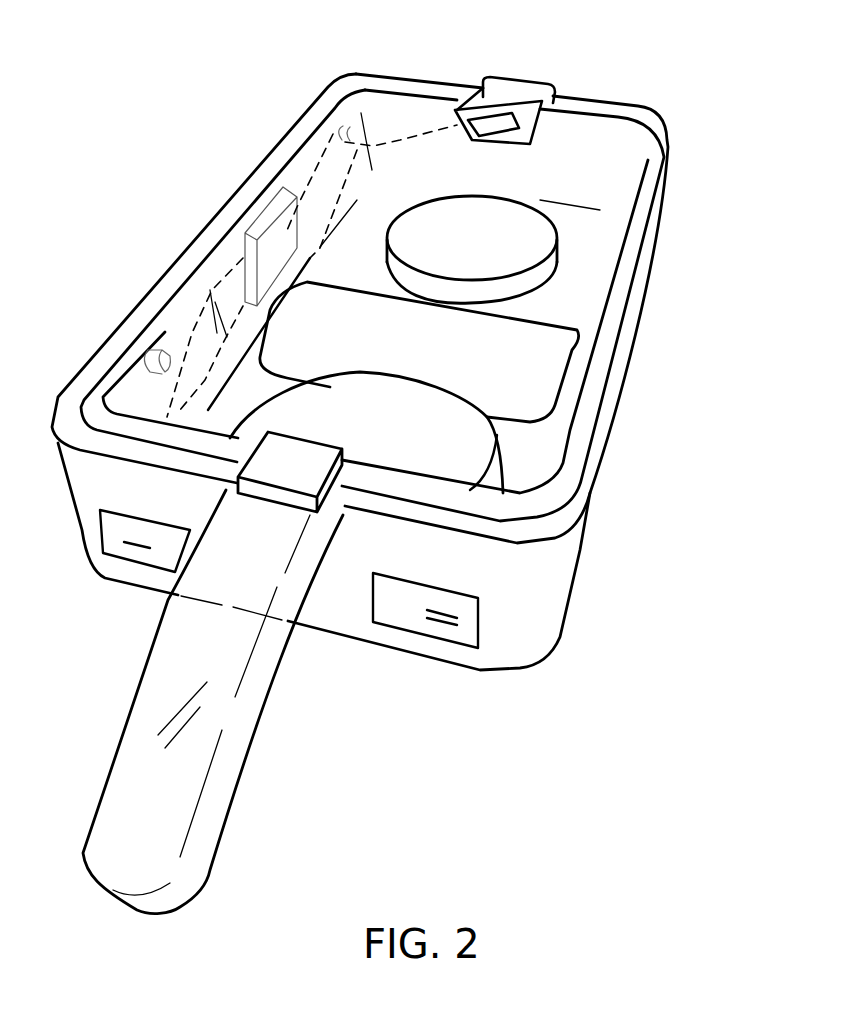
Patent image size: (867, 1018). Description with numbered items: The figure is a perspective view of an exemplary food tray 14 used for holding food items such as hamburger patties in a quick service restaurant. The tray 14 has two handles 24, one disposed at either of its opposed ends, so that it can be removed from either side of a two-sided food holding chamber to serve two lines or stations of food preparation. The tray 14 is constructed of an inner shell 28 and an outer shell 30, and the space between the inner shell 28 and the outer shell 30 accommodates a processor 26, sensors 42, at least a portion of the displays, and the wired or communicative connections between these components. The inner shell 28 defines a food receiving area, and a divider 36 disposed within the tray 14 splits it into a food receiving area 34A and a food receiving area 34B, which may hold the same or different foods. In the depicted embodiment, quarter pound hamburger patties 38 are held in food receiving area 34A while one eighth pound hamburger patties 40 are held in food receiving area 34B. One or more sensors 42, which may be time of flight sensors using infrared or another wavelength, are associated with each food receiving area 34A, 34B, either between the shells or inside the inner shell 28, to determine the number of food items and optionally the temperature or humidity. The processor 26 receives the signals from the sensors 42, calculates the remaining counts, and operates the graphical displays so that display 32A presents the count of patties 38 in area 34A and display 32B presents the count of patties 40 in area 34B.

The food tray 14 is at (151, 142).
The handle 24 is at (533, 83).
The processor 26 is at (258, 212).
The inner shell 28 is at (620, 112).
The outer shell 30 is at (667, 199).
The display 32A is at (110, 528).
The display 32B is at (470, 613).
The food receiving area 34A is at (536, 413).
The food receiving area 34B is at (400, 120).
The divider 36 is at (560, 350).
The quarter pound hamburger patties 38 is at (373, 380).
The one eighth pound hamburger patties 40 is at (560, 257).
The sensor 42 is at (490, 120).